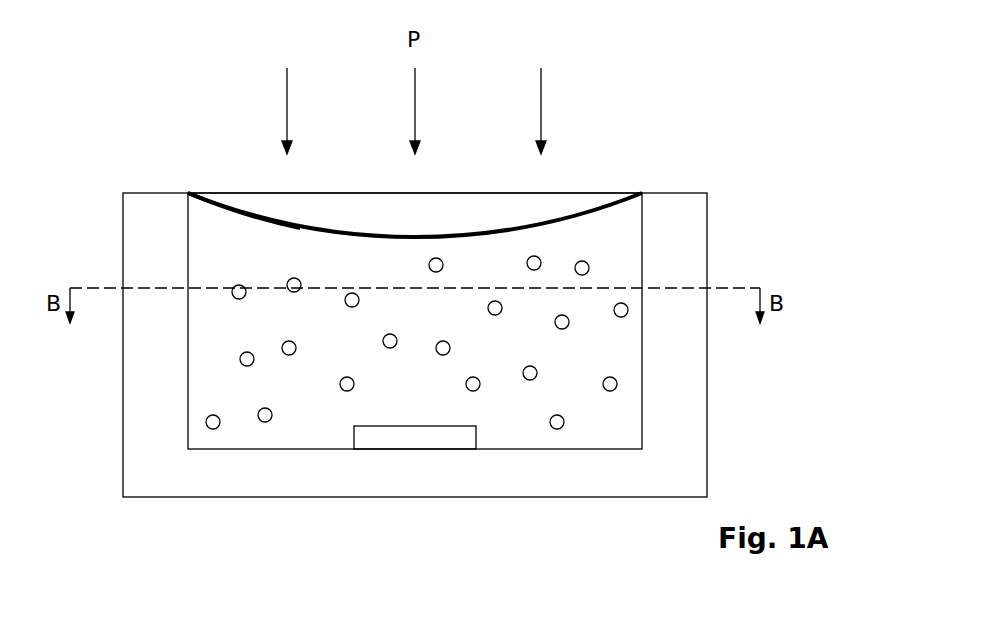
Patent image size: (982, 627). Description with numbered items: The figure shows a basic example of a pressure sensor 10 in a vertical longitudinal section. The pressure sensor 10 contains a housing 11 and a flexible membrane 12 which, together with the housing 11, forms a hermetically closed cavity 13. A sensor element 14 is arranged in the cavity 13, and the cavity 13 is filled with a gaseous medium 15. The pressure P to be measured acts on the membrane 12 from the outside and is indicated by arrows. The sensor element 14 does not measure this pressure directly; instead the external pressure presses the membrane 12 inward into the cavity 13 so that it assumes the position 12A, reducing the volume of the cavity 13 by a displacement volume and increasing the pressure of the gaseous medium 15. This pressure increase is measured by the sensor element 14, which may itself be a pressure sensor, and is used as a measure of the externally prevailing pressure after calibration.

The pressure sensor 10 is at (748, 95).
The housing 11 is at (146, 406).
The flexible membrane 12 is at (590, 193).
The deflected membrane position 12A is at (223, 215).
The cavity 13 is at (628, 350).
The sensor element 14 is at (407, 438).
The gaseous medium 15 is at (588, 268).